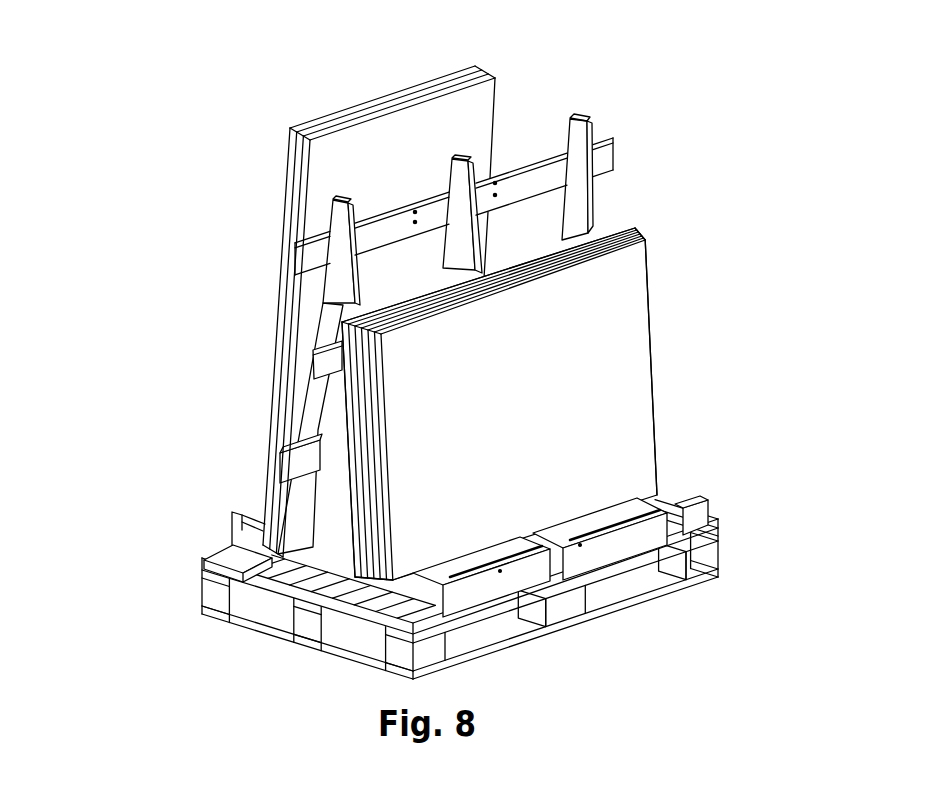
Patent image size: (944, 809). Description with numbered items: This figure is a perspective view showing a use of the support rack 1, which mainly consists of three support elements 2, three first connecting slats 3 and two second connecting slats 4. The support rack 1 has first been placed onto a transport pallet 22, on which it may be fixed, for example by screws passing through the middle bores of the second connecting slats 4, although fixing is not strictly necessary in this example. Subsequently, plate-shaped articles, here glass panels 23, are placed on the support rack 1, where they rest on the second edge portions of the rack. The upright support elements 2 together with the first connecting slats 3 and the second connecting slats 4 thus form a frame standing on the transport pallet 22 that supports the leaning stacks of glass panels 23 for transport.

The support rack 1 is at (640, 116).
The support element 2 is at (572, 230).
The first connecting slat 3 is at (593, 158).
The second connecting slat 4 is at (695, 507).
The transport pallet 22 is at (703, 563).
The glass panel 23 is at (328, 163).